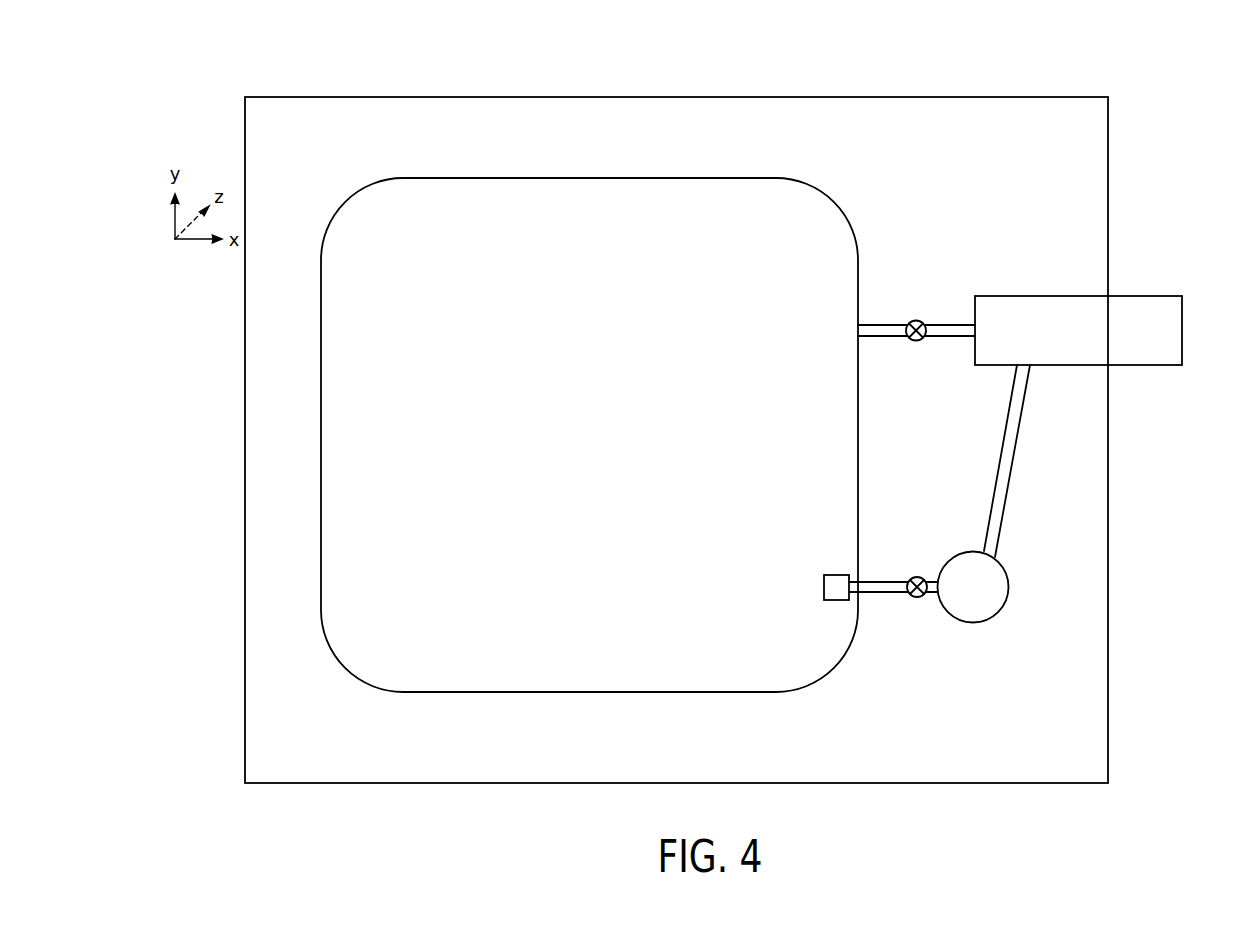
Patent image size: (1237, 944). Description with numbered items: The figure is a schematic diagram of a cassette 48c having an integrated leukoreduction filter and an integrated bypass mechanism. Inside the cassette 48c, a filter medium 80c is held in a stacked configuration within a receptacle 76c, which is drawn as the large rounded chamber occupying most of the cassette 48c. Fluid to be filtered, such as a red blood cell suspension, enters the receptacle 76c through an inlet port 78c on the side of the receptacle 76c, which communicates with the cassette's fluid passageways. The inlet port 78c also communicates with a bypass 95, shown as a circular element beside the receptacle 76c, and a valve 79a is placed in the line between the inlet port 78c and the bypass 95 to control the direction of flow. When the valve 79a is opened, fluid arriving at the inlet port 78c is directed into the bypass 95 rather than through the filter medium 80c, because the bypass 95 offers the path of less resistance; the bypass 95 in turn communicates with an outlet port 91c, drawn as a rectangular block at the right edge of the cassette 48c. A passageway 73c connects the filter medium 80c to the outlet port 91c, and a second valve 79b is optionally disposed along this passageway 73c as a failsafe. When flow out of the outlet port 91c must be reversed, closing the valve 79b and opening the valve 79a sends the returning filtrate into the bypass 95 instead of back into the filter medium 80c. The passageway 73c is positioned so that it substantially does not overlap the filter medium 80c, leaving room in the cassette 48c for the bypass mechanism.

The cassette 48c is at (655, 97).
The receptacle 76c is at (368, 425).
The filter medium 80c is at (810, 217).
The outlet port 91c is at (1141, 296).
The passageway 73c is at (953, 323).
The second valve 79b is at (915, 320).
The valve 79a is at (912, 598).
The bypass 95 is at (1006, 605).
The inlet port 78c is at (824, 586).